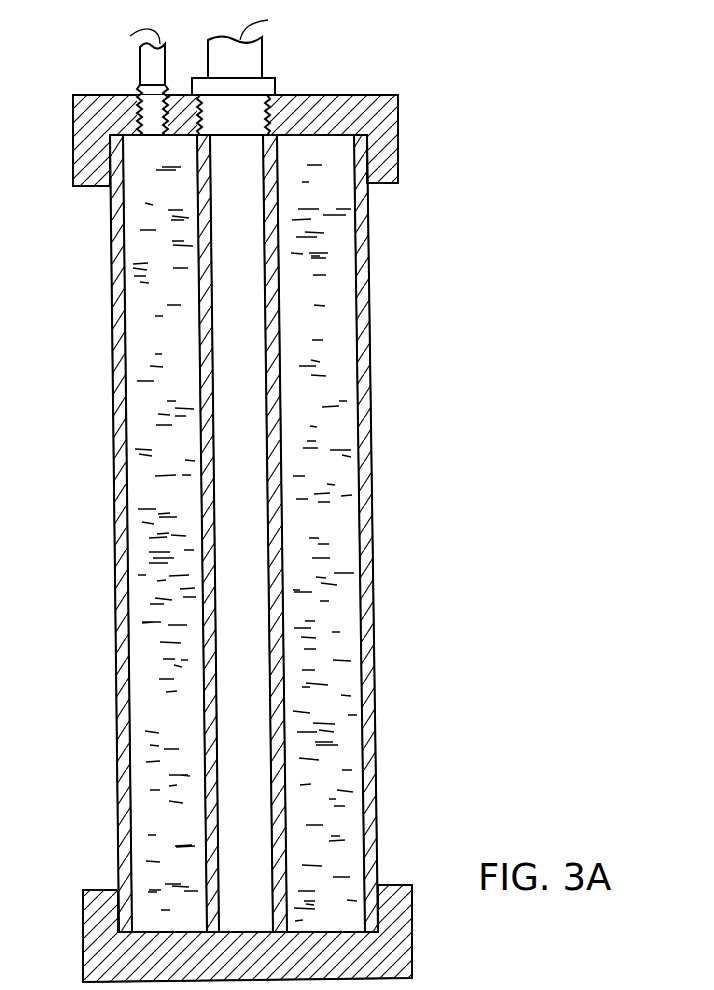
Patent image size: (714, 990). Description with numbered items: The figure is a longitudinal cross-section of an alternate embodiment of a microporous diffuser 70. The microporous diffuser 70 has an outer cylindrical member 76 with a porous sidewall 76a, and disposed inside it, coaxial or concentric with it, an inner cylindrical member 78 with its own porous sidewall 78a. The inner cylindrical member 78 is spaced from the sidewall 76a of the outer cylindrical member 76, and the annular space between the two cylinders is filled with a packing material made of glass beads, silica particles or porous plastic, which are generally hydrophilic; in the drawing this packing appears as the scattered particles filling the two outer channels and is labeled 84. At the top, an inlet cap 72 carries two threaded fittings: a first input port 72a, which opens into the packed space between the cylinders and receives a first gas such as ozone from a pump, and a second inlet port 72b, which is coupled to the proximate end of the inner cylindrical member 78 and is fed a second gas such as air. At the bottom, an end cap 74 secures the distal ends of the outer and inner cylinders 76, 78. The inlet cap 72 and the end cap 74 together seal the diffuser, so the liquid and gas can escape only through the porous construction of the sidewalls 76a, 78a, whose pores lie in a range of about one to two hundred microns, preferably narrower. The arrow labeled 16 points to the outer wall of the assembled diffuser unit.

The microporous diffuser 70 is at (546, 370).
The inlet cap 72 is at (398, 133).
The first input port 72a is at (137, 88).
The second inlet port 72b is at (276, 80).
The end cap 74 is at (413, 953).
The outer cylindrical member 76 is at (372, 480).
The sidewall of outer cylindrical member 76a is at (112, 403).
The inner cylindrical member 78 is at (286, 603).
The sidewall of inner cylindrical member 78a is at (203, 530).
The dielectric packing material 84 is at (333, 293).
The ozone generator cell 16 is at (381, 782).